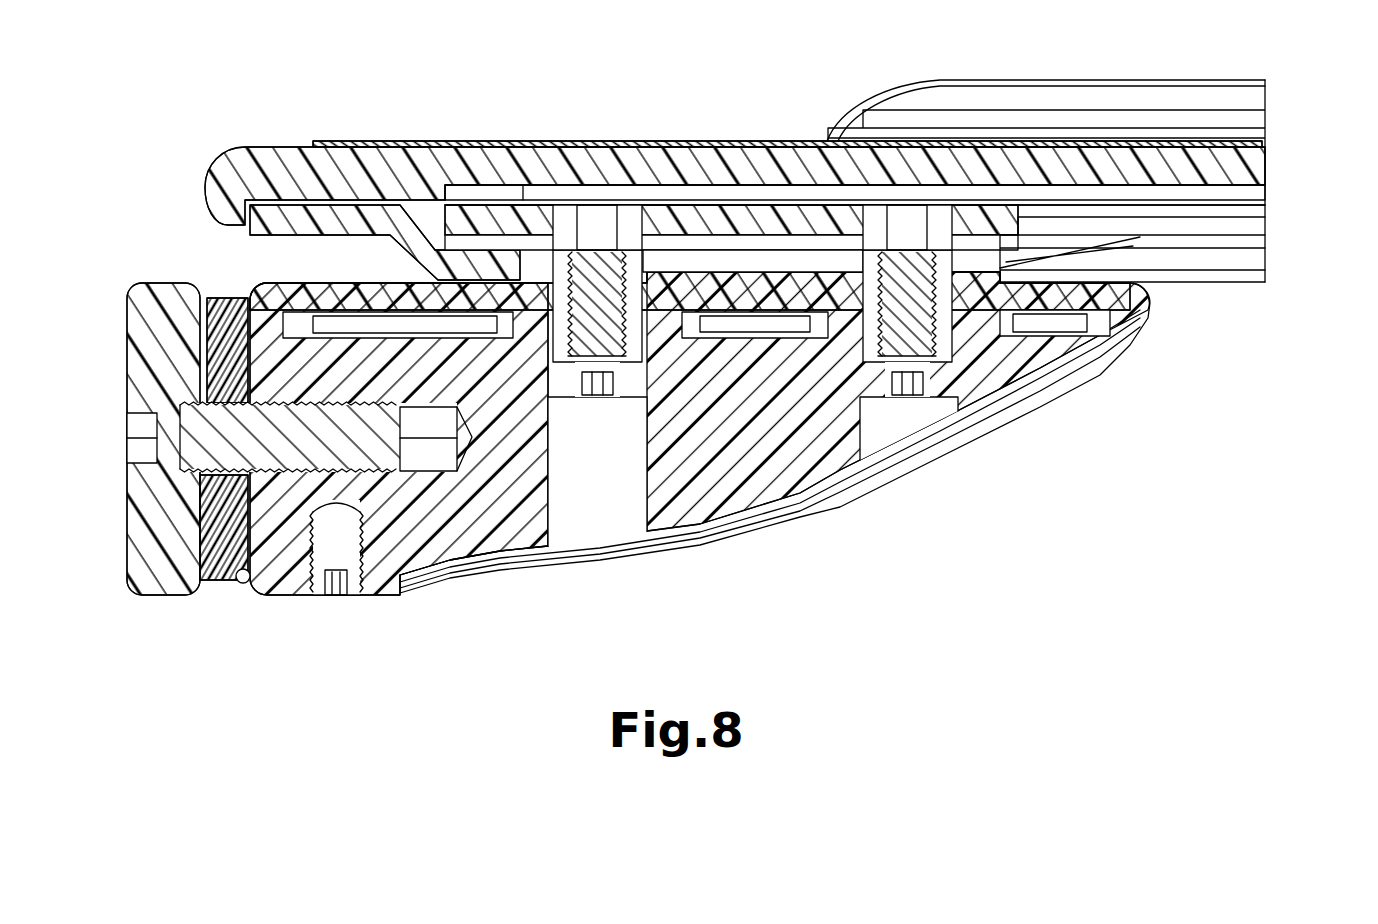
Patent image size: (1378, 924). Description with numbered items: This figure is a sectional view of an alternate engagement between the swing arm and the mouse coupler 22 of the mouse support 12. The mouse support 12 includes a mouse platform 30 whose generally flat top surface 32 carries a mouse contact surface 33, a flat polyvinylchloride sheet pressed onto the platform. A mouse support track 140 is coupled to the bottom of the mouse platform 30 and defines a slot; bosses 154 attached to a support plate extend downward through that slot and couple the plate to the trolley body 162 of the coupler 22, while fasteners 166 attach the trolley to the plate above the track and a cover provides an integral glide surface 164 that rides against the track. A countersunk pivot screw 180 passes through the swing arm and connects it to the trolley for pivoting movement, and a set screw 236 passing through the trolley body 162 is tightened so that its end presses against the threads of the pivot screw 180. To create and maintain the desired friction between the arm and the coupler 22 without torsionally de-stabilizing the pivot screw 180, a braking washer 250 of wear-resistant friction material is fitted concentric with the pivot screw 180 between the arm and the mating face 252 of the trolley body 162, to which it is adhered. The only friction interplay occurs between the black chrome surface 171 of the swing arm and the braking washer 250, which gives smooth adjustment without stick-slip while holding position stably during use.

The mouse support 12 is at (746, 58).
The mouse coupler 22 is at (492, 616).
The mouse platform 30 is at (237, 175).
The top surface 32 is at (263, 147).
The mouse contact surface 33 is at (447, 140).
The mouse support track 140 is at (1212, 273).
The bosses 154 is at (563, 230).
The trolley body 162 is at (760, 467).
The glide surface 164 is at (1000, 265).
The fasteners 166 is at (628, 392).
The black chrome surface 171 is at (207, 527).
The pivot screw 180 is at (278, 440).
The set screw 236 is at (340, 590).
The braking washer 250 is at (216, 297).
The mating face 252 is at (243, 578).